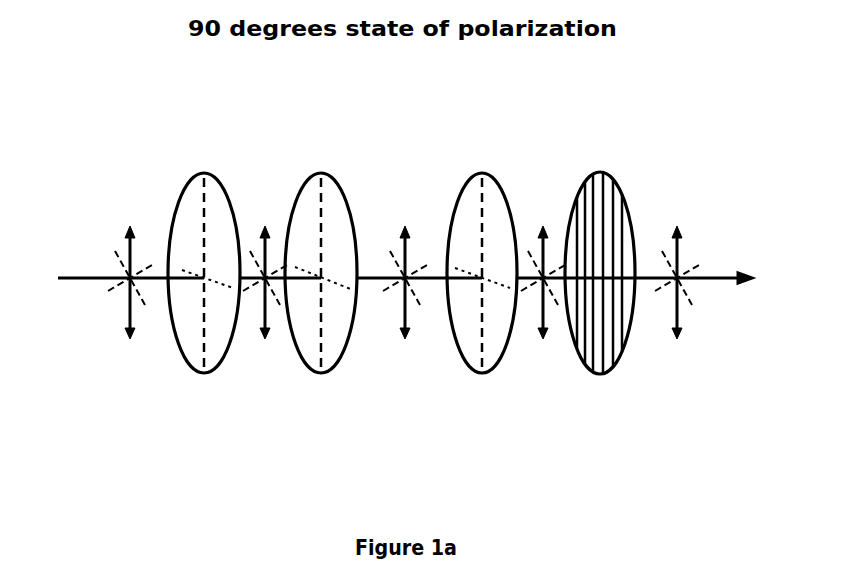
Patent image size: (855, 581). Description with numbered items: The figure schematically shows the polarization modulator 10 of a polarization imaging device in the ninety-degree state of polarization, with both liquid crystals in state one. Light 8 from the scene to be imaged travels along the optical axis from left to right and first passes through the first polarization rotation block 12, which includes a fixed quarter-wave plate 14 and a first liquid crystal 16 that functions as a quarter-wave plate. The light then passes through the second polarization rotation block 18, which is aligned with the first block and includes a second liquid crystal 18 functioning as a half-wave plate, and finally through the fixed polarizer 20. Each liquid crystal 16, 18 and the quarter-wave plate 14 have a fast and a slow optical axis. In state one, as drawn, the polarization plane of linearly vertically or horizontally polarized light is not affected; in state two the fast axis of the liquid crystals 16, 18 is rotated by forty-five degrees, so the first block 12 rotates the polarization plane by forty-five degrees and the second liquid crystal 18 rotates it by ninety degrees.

The light 8 is at (72, 278).
The polarization modulator 10 is at (783, 73).
The first polarization rotation block 12 is at (352, 150).
The fixed quarter-wave plate 14 is at (170, 201).
The first liquid crystal 16 is at (351, 201).
The second liquid crystal 18 is at (487, 173).
The fixed polarizer 20 is at (617, 186).